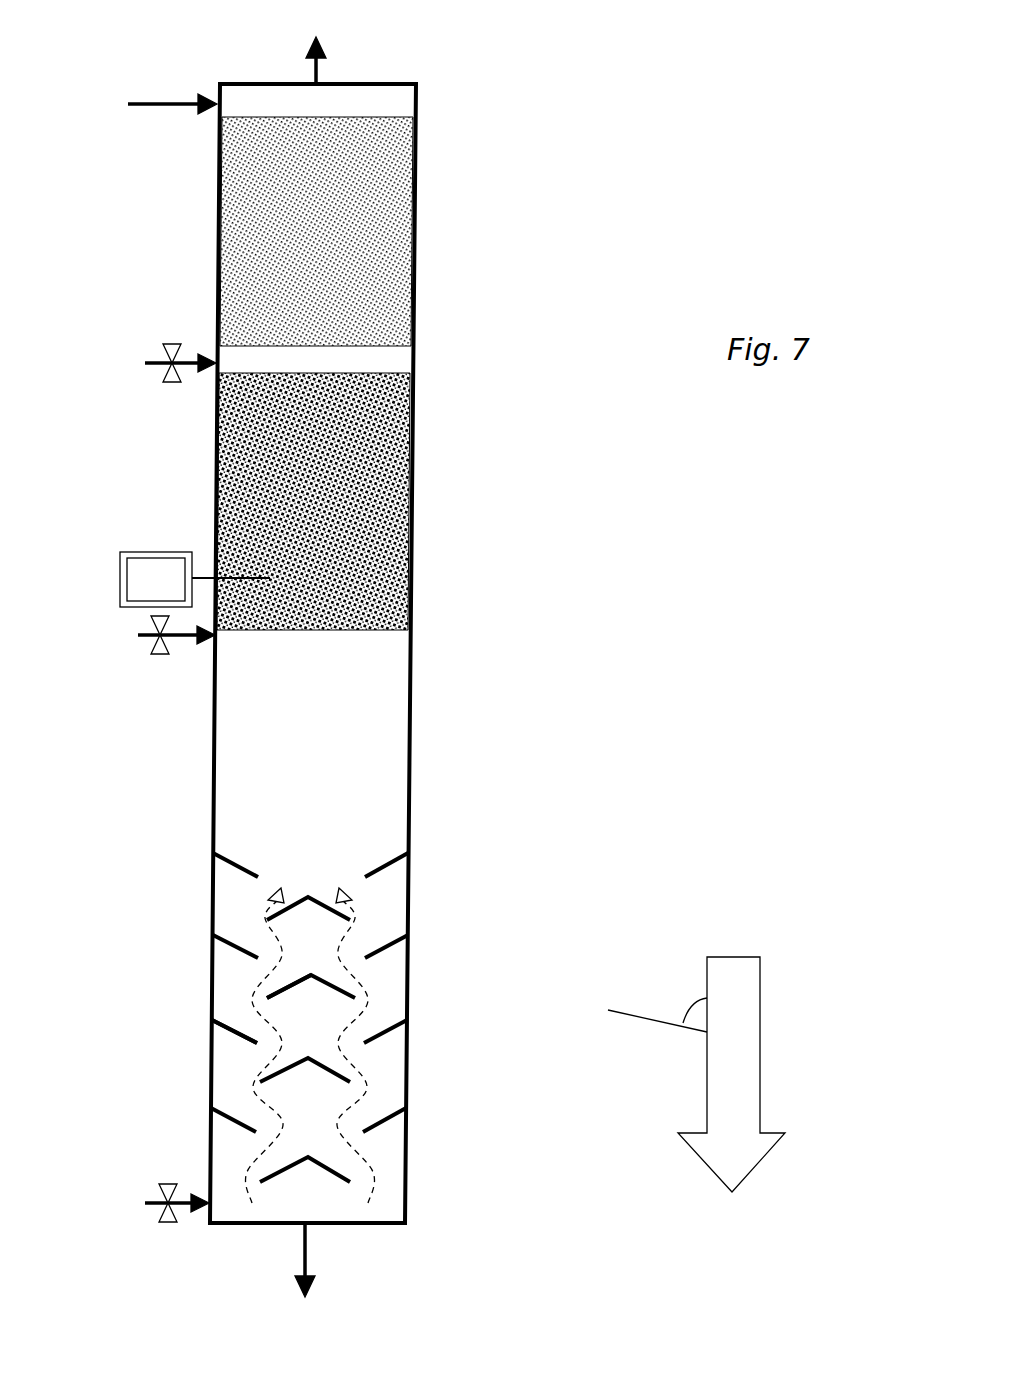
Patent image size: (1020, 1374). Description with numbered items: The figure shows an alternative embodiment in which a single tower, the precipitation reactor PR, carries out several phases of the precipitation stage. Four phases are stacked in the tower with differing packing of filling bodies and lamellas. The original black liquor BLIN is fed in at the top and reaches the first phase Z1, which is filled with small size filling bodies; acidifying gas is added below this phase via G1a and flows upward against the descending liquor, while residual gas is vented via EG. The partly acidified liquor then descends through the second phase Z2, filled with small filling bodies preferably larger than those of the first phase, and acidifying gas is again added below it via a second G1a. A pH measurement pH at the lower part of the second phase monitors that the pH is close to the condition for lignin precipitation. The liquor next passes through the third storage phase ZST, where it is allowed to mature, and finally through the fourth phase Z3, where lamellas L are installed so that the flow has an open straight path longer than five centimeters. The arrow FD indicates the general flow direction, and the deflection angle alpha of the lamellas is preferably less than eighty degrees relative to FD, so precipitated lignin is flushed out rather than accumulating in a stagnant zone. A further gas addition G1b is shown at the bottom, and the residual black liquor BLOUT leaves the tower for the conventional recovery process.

The precipitation reactor PR is at (147, 238).
The first phase Z1 is at (505, 117).
The second phase Z2 is at (502, 373).
The third storage phase ZST is at (500, 659).
The fourth phase Z3 is at (500, 865).
The lamellas L is at (280, 990).
The residual gas vent EG is at (308, 44).
The original black liquor inlet BLIN is at (144, 105).
The residual black liquor outlet BLOUT is at (294, 1286).
The acidifying gas feed G1a is at (153, 500).
The acidifying gas feed G1b is at (150, 1203).
The pH measurement pH is at (195, 579).
The general flow direction FD is at (731, 1074).
The deflection angle alpha is at (657, 1004).